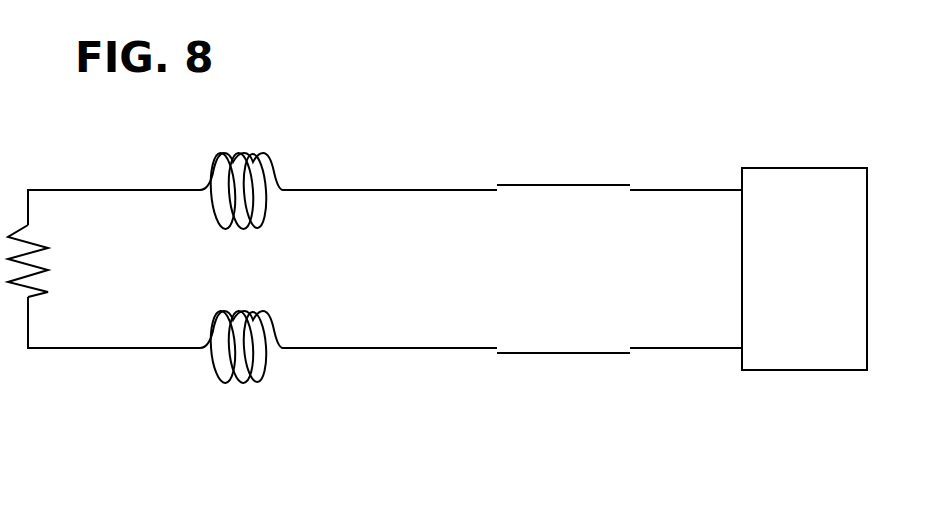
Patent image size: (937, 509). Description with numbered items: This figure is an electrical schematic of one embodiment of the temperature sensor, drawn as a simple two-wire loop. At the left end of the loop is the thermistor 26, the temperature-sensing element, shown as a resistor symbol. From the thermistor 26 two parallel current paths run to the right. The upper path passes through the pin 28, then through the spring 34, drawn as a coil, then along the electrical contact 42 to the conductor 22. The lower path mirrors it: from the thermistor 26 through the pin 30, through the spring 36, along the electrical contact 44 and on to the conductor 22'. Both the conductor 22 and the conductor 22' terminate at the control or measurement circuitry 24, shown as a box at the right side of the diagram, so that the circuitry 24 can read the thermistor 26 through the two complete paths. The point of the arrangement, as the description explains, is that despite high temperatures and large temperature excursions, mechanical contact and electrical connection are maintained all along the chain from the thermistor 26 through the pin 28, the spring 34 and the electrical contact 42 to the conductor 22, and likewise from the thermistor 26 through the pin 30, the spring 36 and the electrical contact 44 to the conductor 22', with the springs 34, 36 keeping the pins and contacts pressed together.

The conductor 22 is at (686, 148).
The conductor 22' is at (686, 408).
The control or measurement circuitry 24 is at (823, 280).
The thermistor 26 is at (42, 268).
The pin 28 is at (139, 180).
The pin 30 is at (129, 362).
The spring 34 is at (291, 160).
The spring 36 is at (247, 398).
The electrical contact 42 is at (558, 175).
The electrical contact 44 is at (548, 370).